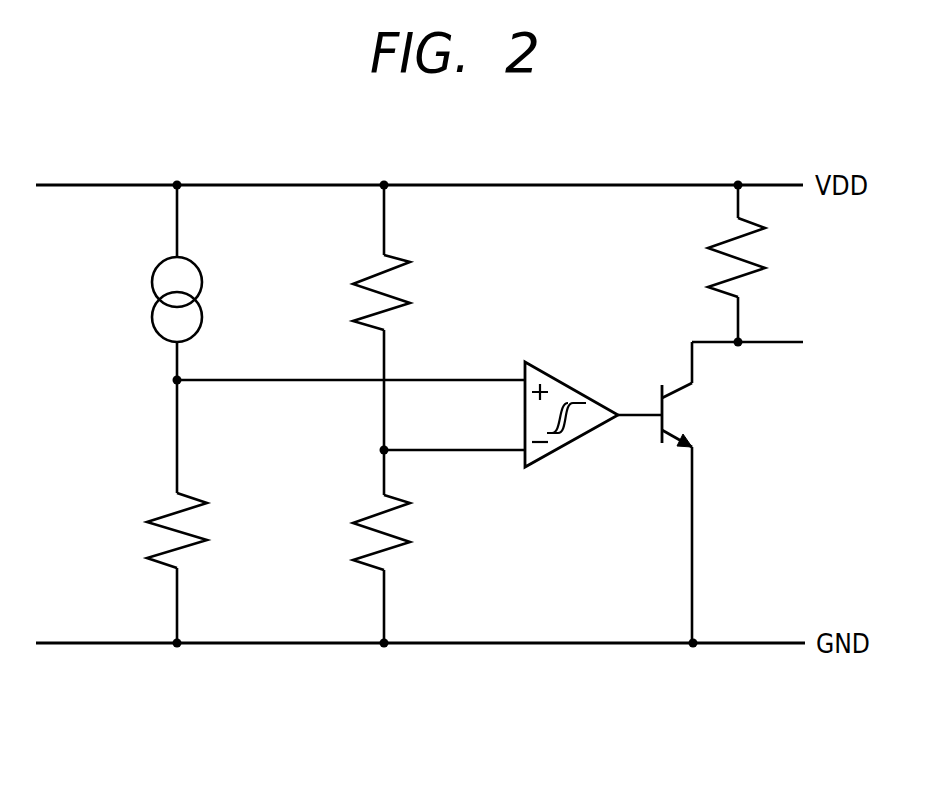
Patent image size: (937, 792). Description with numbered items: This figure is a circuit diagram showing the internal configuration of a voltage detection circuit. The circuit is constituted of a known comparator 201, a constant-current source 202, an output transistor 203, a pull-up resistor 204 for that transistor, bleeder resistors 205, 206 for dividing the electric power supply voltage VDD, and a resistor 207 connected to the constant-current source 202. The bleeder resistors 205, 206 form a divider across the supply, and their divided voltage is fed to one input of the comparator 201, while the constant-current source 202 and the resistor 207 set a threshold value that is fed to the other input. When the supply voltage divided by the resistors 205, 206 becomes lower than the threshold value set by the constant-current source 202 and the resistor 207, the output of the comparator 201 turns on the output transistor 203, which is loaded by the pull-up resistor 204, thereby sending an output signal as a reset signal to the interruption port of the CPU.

The comparator 201 is at (577, 389).
The constant-current source 202 is at (200, 270).
The output transistor 203 is at (690, 416).
The pull-up resistor 204 is at (752, 256).
The bleeder resistor 205 is at (393, 291).
The bleeder resistor 206 is at (395, 531).
The resistor 207 is at (188, 530).